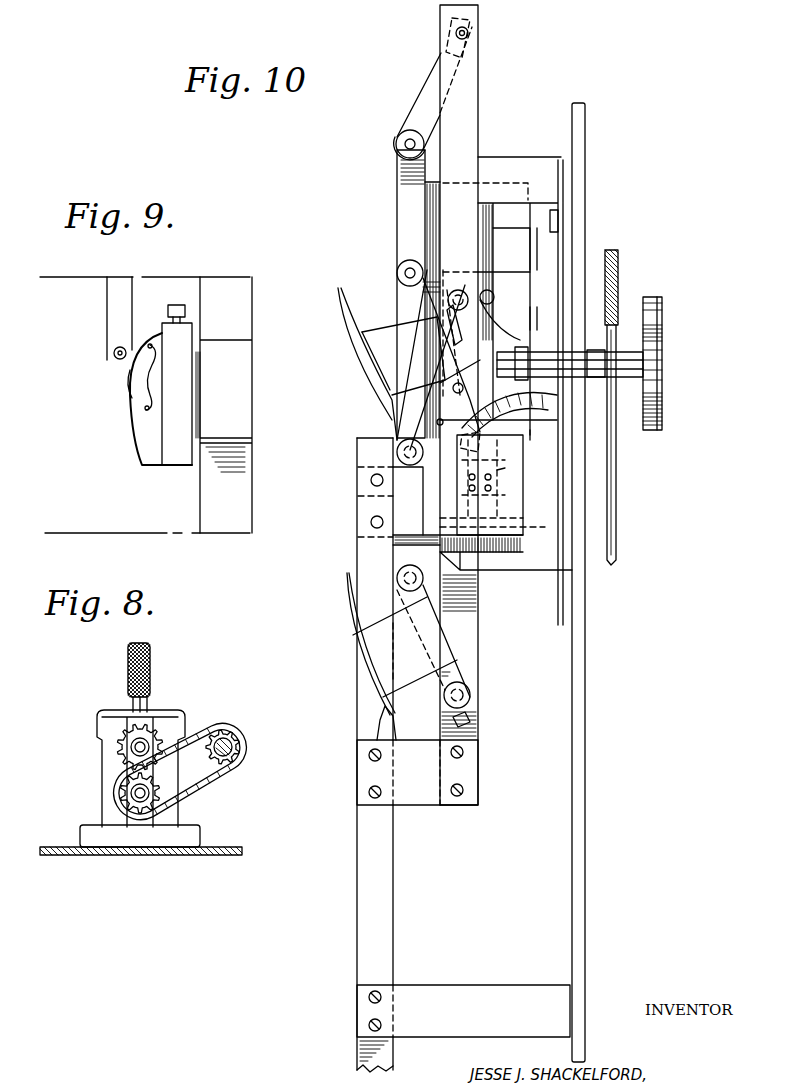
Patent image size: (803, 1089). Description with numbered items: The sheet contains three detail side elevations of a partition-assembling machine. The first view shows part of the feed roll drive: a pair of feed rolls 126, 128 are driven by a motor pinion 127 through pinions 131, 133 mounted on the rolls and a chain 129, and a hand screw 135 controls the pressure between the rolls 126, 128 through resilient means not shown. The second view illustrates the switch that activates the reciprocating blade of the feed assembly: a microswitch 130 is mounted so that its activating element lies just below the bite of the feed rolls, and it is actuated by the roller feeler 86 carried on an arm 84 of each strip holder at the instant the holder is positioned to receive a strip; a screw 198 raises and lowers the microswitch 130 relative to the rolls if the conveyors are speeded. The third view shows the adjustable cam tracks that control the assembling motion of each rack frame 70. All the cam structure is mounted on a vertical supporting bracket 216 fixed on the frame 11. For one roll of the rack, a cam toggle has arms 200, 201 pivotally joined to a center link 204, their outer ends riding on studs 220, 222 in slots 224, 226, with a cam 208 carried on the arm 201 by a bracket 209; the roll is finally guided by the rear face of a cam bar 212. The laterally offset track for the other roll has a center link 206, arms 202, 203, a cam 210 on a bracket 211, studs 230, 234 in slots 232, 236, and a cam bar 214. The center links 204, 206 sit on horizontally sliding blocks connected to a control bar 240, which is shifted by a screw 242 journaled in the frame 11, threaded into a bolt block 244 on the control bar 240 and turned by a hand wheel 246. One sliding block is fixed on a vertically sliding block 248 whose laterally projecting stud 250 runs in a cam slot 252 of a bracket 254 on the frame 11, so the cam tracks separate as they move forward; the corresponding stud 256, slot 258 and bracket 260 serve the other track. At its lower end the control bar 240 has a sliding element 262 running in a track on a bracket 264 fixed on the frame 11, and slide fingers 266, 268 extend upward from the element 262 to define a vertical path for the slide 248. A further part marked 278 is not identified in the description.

In FIG. 10, the frame 11 is at (610, 500).
In FIG. 9, the rack frame 70 is at (242, 401).
In FIG. 9, the arm 84 is at (112, 310).
In FIG. 9, the roller feeler 86 is at (115, 358).
In FIG. 9, the microswitch 130 is at (138, 438).
In FIG. 9, the screw 198 is at (182, 305).
In FIG. 8, the feed roll 126 is at (138, 748).
In FIG. 8, the pinion 127 is at (231, 760).
In FIG. 8, the feed roll 128 is at (133, 793).
In FIG. 8, the chain 129 is at (190, 787).
In FIG. 8, the pinion 131 is at (120, 747).
In FIG. 8, the pinion 133 is at (130, 803).
In FIG. 8, the hand screw 135 is at (150, 671).
In FIG. 10, the arm 200 is at (440, 68).
In FIG. 10, the arm 201 is at (400, 288).
In FIG. 10, the arm 202 is at (420, 365).
In FIG. 10, the arm 203 is at (448, 643).
In FIG. 10, the center link 204 is at (405, 217).
In FIG. 10, the center link 206 is at (390, 498).
In FIG. 10, the cam 208 is at (362, 333).
In FIG. 10, the bracket 209 is at (383, 347).
In FIG. 10, the cam 210 is at (348, 612).
In FIG. 10, the bracket 211 is at (373, 665).
In FIG. 10, the cam bar 212 is at (366, 555).
In FIG. 10, the cam bar 214 is at (368, 910).
In FIG. 10, the vertical supporting bracket 216 is at (467, 98).
In FIG. 10, the stud 220 is at (468, 33).
In FIG. 10, the stud 222 is at (440, 383).
In FIG. 10, the slot 224 is at (438, 41).
In FIG. 10, the slot 226 is at (430, 193).
In FIG. 10, the stud 230 is at (405, 260).
In FIG. 10, the slot 232 is at (428, 312).
In FIG. 10, the stud 234 is at (465, 693).
In FIG. 10, the slot 236 is at (410, 512).
In FIG. 10, the control bar 240 is at (605, 272).
In FIG. 10, the screw 242 is at (625, 312).
In FIG. 10, the nut 244 is at (560, 385).
In FIG. 10, the hand wheel 246 is at (662, 345).
In FIG. 10, the vertically sliding block 248 is at (560, 463).
In FIG. 10, the stud 250 is at (560, 455).
In FIG. 10, the cam slot 252 is at (440, 420).
In FIG. 10, the bracket 254 is at (575, 405).
In FIG. 10, the stud 256 is at (495, 283).
In FIG. 10, the slot 258 is at (493, 272).
In FIG. 10, the bracket 260 is at (550, 313).
In FIG. 10, the sliding element 262 is at (560, 525).
In FIG. 10, the bracket 264 is at (523, 558).
In FIG. 10, the slide finger 266 is at (462, 422).
In FIG. 10, the slide finger 268 is at (560, 433).
In FIG. 10, the clip 278 is at (550, 220).